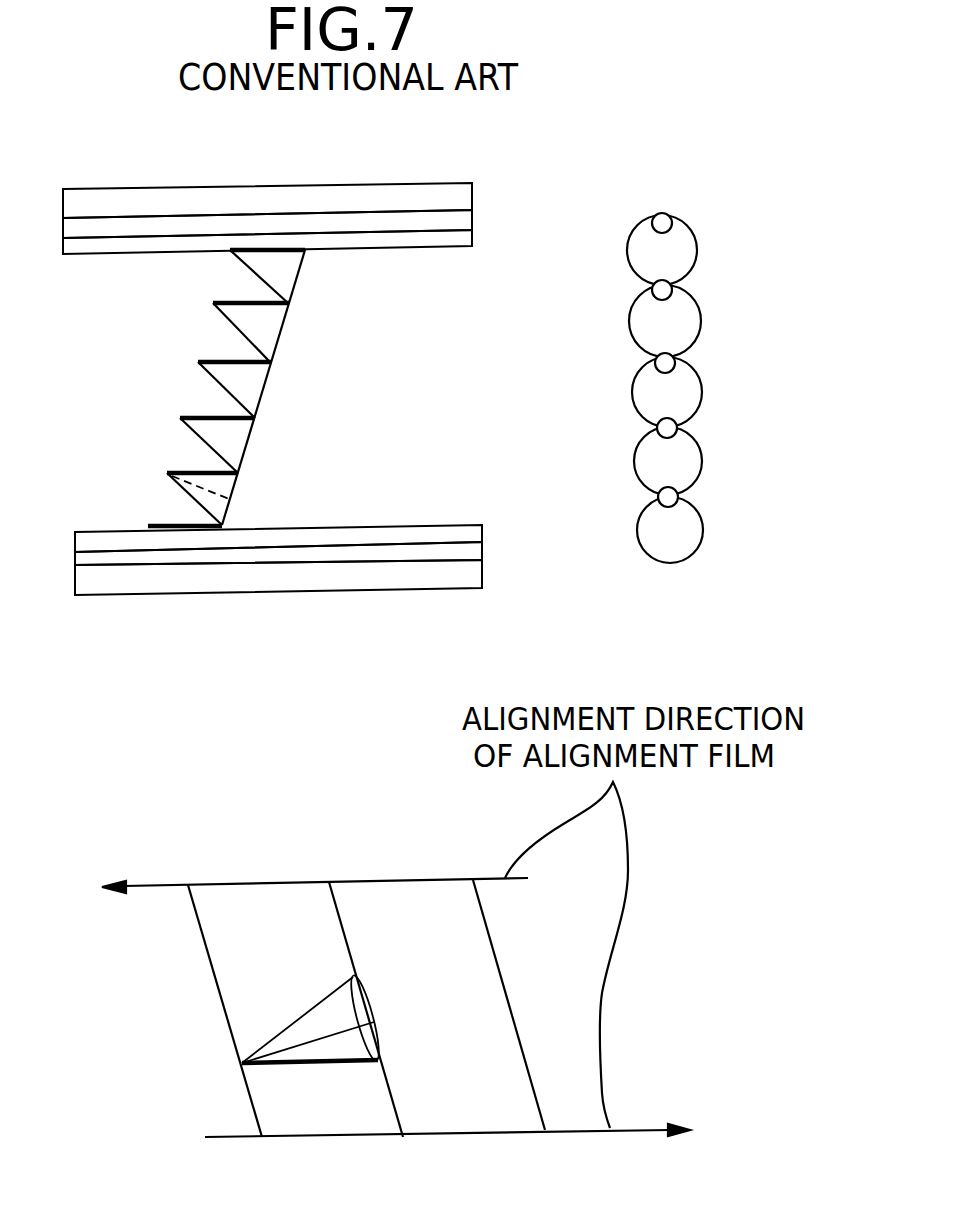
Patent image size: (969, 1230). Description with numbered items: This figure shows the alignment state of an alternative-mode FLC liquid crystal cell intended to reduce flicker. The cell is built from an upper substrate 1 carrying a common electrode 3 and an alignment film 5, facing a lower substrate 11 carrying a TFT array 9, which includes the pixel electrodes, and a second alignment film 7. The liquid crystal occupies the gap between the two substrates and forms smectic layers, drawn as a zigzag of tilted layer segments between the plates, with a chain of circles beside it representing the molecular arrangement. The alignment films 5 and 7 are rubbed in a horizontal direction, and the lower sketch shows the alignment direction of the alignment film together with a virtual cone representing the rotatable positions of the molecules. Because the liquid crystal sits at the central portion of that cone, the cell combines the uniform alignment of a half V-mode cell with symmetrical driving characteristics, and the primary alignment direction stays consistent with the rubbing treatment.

The upper substrate 1 is at (466, 193).
The common electrode 3 is at (470, 221).
The alignment film 5 is at (470, 239).
The alignment film 7 is at (482, 532).
The TFT array 9 is at (482, 549).
The lower substrate 11 is at (482, 578).